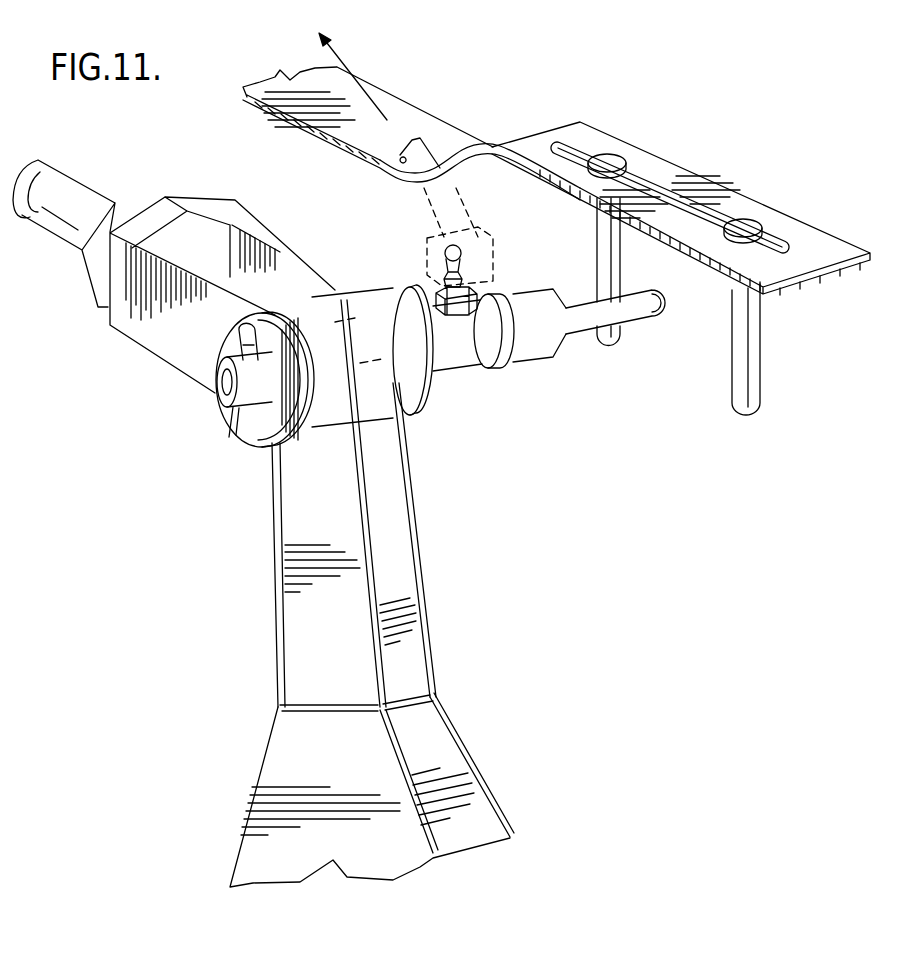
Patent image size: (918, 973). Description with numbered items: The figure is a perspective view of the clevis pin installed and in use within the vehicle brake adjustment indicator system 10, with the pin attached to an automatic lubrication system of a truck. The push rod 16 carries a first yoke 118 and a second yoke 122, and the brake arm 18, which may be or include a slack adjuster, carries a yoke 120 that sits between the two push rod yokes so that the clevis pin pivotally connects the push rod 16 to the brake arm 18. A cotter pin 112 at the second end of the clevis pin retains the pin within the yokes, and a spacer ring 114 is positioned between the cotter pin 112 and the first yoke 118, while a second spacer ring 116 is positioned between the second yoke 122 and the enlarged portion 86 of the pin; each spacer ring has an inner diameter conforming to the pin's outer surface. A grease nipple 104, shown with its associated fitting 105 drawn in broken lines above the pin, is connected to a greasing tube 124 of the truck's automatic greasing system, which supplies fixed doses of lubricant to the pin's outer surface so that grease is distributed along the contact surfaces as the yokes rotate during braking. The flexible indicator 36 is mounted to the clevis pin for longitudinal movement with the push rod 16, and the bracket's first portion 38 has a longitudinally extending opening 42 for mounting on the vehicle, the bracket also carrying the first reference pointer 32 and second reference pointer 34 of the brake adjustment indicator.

The vehicle brake adjustment indicator system 10 is at (189, 548).
The push rod 16 is at (67, 187).
The brake arm 18 is at (450, 763).
The first reference pointer 32 is at (605, 338).
The second reference pointer 34 is at (760, 412).
The indicator 36 is at (558, 340).
The first portion 38 is at (823, 247).
The opening 42 is at (670, 187).
The enlarged portion 86 is at (487, 367).
The grease nipple 104 is at (467, 270).
The grease fitting 105 is at (473, 237).
The cotter pin 112 is at (236, 422).
The spacer ring 114 is at (224, 360).
The spacer ring 116 is at (432, 400).
The first yoke 118 is at (300, 445).
The yoke 120 is at (357, 330).
The second yoke 122 is at (402, 408).
The greasing tube 124 is at (436, 202).